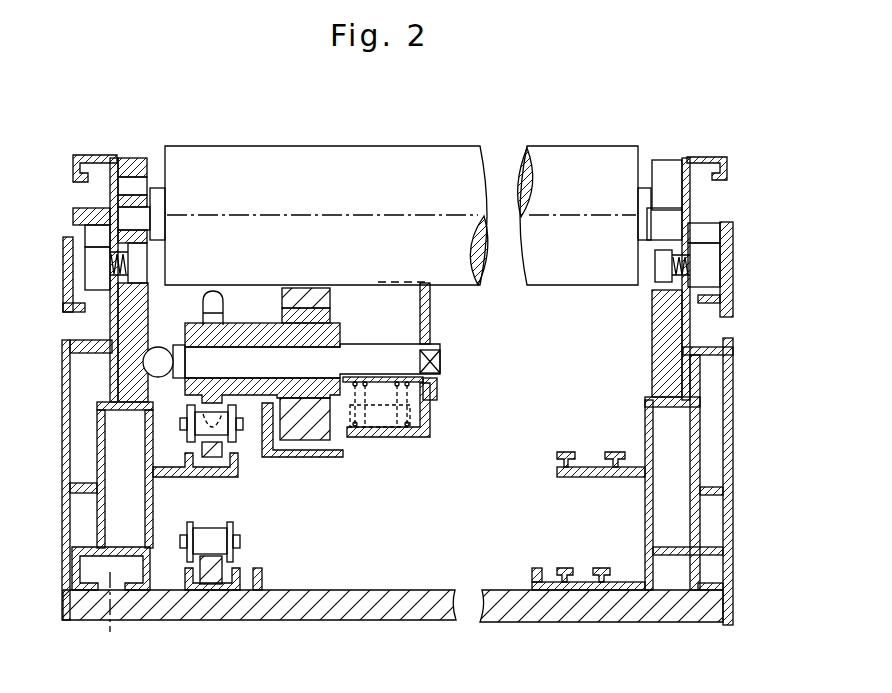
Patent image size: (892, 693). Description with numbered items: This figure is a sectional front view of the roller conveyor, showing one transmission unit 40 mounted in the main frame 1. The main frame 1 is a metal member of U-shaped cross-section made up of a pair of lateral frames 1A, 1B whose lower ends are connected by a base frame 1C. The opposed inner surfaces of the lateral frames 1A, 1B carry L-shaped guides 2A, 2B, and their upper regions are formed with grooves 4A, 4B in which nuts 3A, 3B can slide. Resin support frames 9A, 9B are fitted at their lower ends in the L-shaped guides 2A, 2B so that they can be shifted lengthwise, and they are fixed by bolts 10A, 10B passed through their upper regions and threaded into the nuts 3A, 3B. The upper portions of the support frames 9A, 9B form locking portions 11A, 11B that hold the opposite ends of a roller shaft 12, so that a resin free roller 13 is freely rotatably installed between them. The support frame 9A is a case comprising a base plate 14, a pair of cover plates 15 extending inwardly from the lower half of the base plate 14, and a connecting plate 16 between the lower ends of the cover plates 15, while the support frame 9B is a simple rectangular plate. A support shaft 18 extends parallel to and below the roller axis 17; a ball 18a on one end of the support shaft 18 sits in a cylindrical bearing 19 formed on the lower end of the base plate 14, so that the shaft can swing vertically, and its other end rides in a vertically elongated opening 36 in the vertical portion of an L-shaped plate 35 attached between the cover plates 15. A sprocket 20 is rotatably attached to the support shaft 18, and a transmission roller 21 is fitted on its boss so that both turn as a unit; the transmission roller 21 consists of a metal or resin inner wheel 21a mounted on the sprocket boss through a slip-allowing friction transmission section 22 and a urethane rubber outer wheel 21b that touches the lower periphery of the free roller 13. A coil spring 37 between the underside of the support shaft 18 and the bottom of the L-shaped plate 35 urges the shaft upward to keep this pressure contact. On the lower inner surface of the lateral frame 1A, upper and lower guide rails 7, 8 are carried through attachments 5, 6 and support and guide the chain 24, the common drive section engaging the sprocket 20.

The main frame 1 is at (87, 629).
The lateral frame 1A is at (64, 487).
The lateral frame 1B is at (728, 490).
The base frame 1C is at (437, 612).
The L-shaped guide 2A is at (100, 404).
The L-shaped guide 2B is at (648, 400).
The nut 3A is at (97, 265).
The nut 3B is at (703, 272).
The groove 4A is at (95, 232).
The groove 4B is at (703, 235).
The attachment 5 is at (185, 467).
The attachment 6 is at (182, 590).
The upper guide rail 7 is at (217, 462).
The lower guide rail 8 is at (210, 592).
The support frame 9A is at (103, 325).
The support frame 9B is at (647, 352).
The bolt 10A is at (137, 263).
The bolt 10B is at (655, 268).
The locking portion 11A is at (117, 222).
The locking portion 11B is at (665, 178).
The roller shaft 12 is at (663, 222).
The free roller 13 is at (430, 165).
The base plate 14 is at (112, 372).
The cover plate 15 is at (385, 318).
The connecting plate 16 is at (295, 457).
The roller axis 17 is at (285, 205).
The support shaft 18 is at (412, 348).
The ball 18a is at (138, 404).
The cylindrical bearing 19 is at (160, 350).
The sprocket 20 is at (215, 293).
The transmission roller 21 is at (331, 446).
The inner wheel 21a is at (305, 318).
The outer wheel 21b is at (300, 292).
The friction transmission section 22 is at (288, 438).
The chain 24 is at (188, 435).
The L-shaped plate 35 is at (430, 425).
The elongated opening 36 is at (440, 382).
The coil spring 37 is at (398, 405).
The transmission unit 40 is at (417, 434).